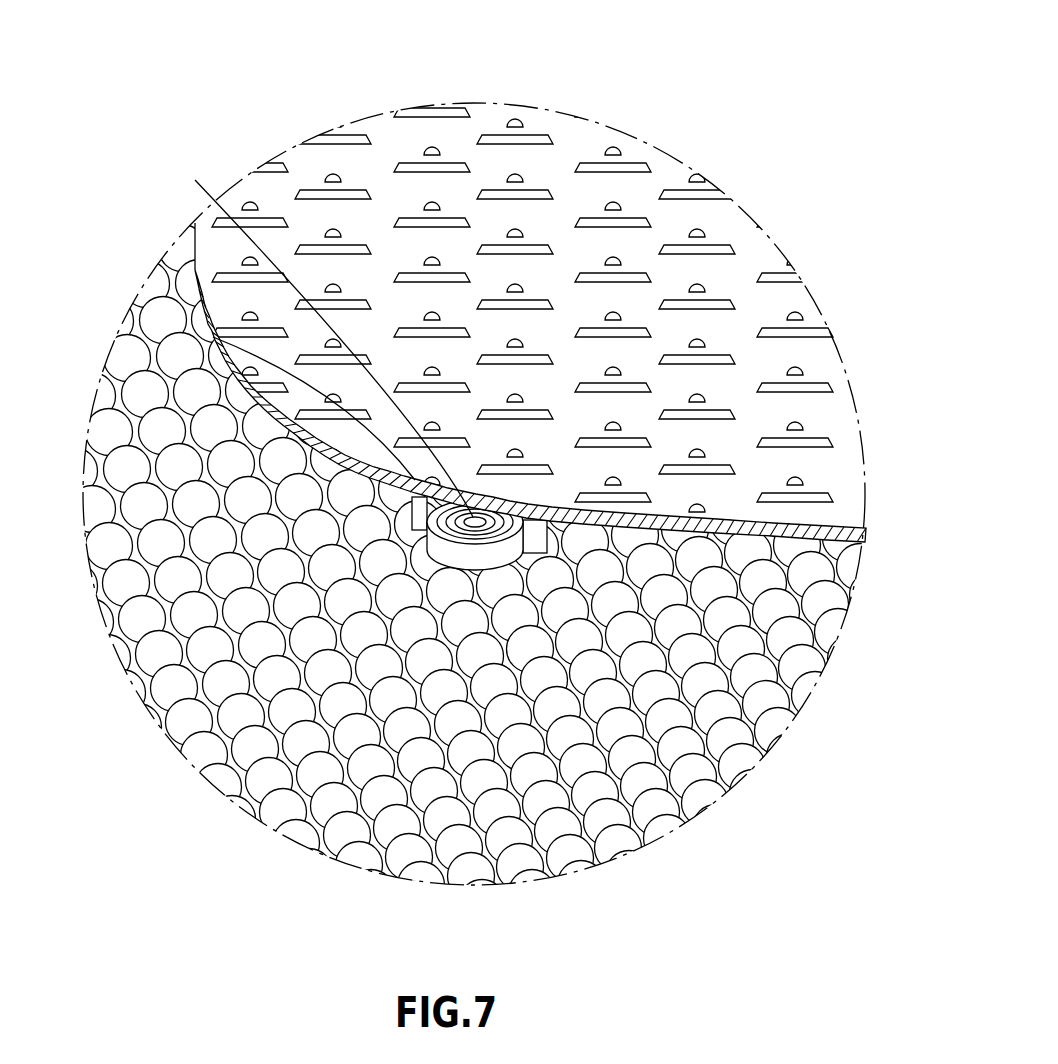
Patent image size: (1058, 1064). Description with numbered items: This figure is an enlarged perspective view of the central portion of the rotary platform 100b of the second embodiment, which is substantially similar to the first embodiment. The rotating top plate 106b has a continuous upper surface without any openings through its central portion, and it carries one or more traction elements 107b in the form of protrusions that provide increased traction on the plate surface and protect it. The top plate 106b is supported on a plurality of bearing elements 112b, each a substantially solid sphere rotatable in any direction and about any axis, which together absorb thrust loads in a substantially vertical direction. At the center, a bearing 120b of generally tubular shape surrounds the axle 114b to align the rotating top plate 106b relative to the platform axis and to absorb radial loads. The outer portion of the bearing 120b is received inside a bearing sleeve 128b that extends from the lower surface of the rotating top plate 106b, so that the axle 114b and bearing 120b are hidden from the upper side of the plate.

The rotary platform 100b is at (735, 52).
The rotating top plate 106b is at (745, 248).
The traction element 107b is at (780, 333).
The bearing element 112b is at (180, 725).
The axle 114b is at (306, 339).
The bearing 120b is at (213, 337).
The bearing sleeve 128b is at (470, 557).